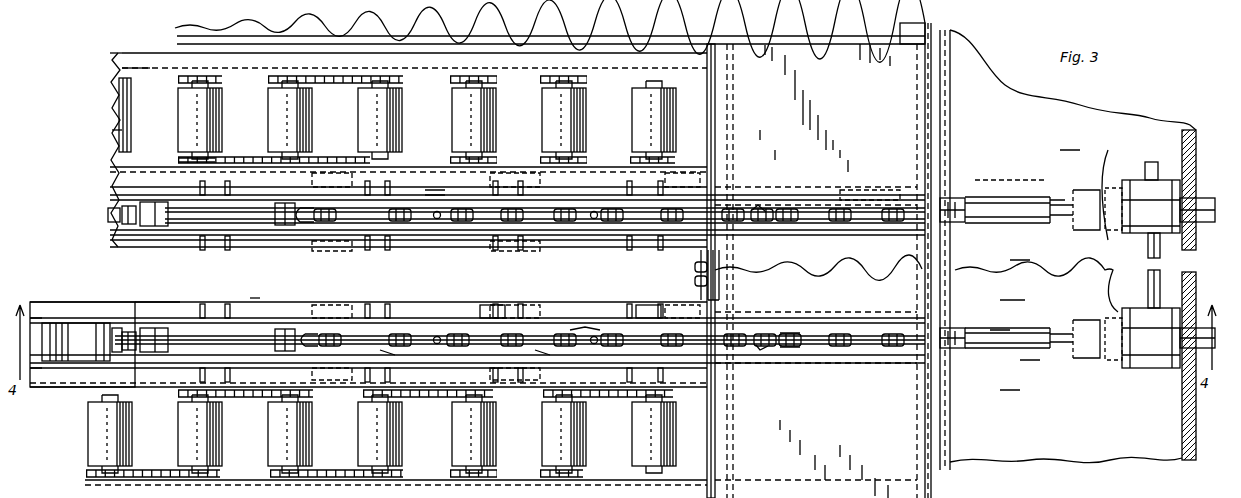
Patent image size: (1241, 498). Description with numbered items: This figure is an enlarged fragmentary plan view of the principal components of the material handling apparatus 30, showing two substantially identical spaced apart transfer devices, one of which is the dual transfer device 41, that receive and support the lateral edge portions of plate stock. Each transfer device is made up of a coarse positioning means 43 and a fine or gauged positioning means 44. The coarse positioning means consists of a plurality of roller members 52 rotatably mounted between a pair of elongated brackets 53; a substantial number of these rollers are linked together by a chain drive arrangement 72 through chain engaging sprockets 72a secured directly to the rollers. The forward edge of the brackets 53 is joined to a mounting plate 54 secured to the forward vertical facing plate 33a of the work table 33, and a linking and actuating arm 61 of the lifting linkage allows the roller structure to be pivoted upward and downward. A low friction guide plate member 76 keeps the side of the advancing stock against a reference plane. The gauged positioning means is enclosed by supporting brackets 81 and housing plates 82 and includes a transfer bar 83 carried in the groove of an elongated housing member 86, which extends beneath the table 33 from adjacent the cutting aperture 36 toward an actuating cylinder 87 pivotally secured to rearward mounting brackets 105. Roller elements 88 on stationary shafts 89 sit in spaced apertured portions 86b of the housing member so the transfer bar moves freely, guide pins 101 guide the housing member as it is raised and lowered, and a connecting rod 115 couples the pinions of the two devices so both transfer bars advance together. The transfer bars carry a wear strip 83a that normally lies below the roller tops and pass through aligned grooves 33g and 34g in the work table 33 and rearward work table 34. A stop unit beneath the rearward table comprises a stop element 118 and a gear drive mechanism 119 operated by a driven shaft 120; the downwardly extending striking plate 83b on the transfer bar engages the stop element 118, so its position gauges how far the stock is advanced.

The material handling apparatus 30 is at (110, 40).
The work table 33 is at (830, 87).
The forward vertical facing plate 33a is at (735, 484).
The grooves or slots 33g is at (808, 202).
The rearward work table 34 is at (1073, 246).
The grooves or slots 34g is at (998, 195).
The blade receiving or cutting aperture 36 is at (942, 100).
The dual transfer device 41 is at (176, 297).
The coarse positioning means 43 is at (103, 138).
The fine or gauged positioning means 44 is at (110, 72).
The roller members 52 is at (258, 104).
The elongated brackets 53 is at (165, 55).
The mounting plate 54 is at (715, 82).
The linking and actuating arm 61 is at (718, 290).
The chain drive arrangement 72 is at (455, 78).
The chain engaging sprockets 72a is at (182, 160).
The low friction guide plate member 76 is at (868, 44).
The supporting brackets 81 is at (202, 240).
The housing plates 82 is at (437, 305).
The transfer bar 83 is at (760, 208).
The wear strip 83a is at (556, 332).
The striking plate 83b is at (940, 200).
The housing member 86 is at (615, 232).
The apertured or slotted portions 86b is at (455, 305).
The actuating cylinder 87 is at (262, 236).
The roller elements 88 is at (470, 330).
The stationary shaft 89 is at (795, 348).
The guide pins 101 is at (425, 352).
The rearward mounting brackets 105 is at (100, 323).
The connecting rod 115 is at (695, 268).
The stop element 118 is at (1025, 210).
The gear drive mechanism 119 is at (1140, 180).
The driven shaft 120 is at (1150, 280).